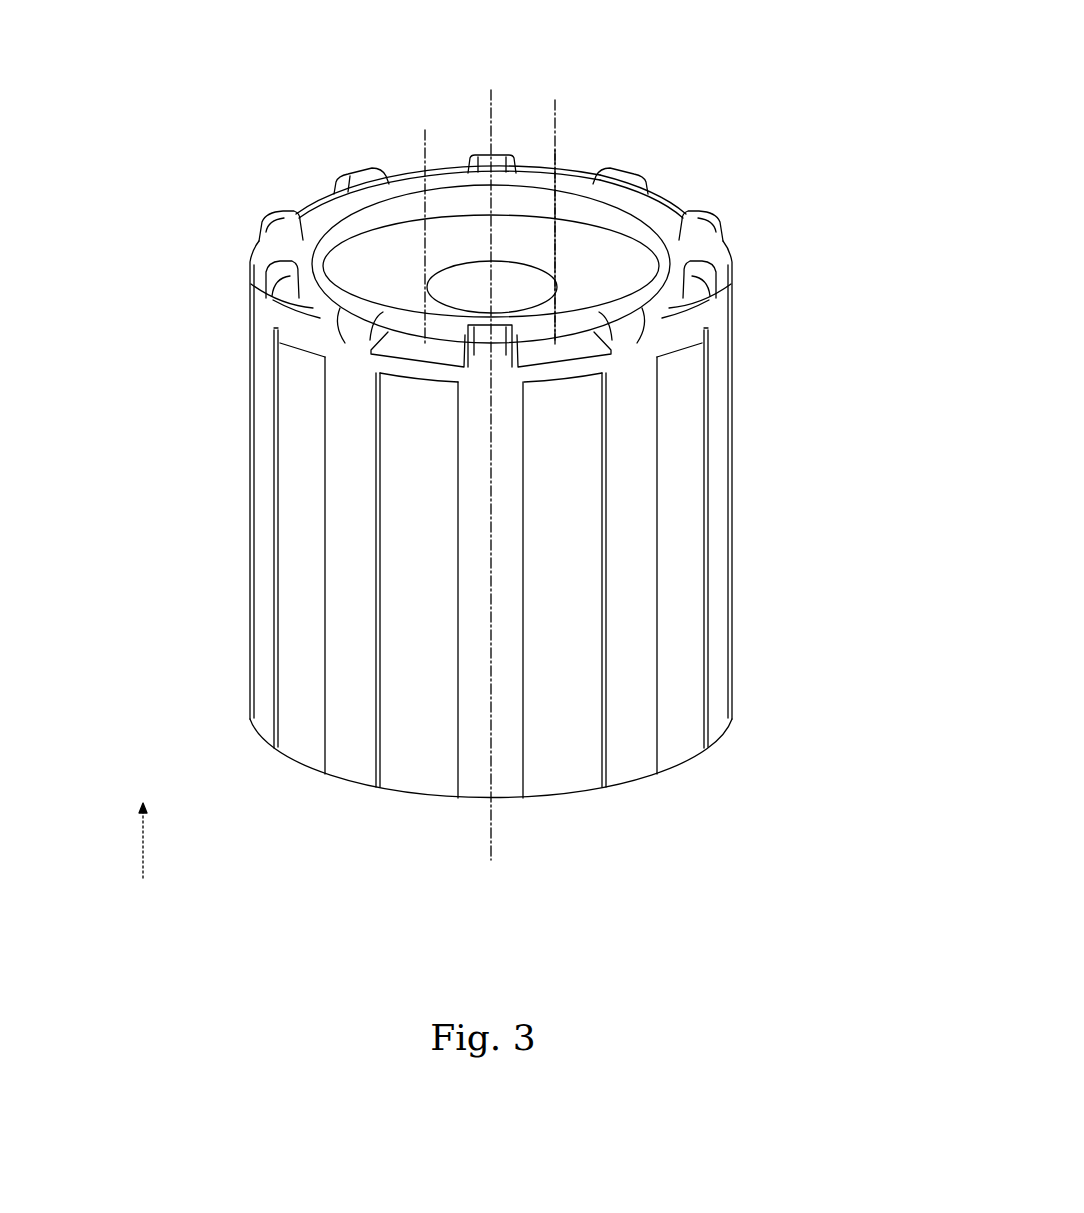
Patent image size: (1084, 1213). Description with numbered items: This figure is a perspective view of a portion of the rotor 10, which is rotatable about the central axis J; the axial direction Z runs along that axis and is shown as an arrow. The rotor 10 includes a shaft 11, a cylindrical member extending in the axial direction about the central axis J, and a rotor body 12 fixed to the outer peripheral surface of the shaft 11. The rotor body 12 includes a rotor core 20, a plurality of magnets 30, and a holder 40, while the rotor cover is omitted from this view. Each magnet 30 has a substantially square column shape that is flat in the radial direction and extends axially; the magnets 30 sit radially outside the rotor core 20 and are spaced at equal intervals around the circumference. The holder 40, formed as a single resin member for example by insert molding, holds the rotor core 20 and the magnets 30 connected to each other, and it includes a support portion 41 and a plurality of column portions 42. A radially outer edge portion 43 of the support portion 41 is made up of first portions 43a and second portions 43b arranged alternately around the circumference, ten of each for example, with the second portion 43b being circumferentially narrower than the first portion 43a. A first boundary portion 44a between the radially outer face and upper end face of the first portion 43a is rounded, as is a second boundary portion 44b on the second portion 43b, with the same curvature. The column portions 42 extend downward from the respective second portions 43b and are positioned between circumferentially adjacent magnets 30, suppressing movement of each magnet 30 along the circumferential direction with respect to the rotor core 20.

The rotor 10 is at (685, 92).
The shaft 11 is at (555, 152).
The rotor body 12 is at (655, 172).
The rotor core 20 is at (626, 266).
The magnet 30 is at (415, 760).
The holder 40 is at (818, 225).
The support portion 41 is at (704, 249).
The column portion 42 is at (738, 380).
The radially outer edge portion 43 is at (243, 108).
The first portion 43a is at (306, 194).
The second portion 43b is at (363, 171).
The first boundary portion 44a is at (409, 345).
The second boundary portion 44b is at (276, 266).
The central axis J is at (491, 105).
The axial direction Z is at (141, 827).